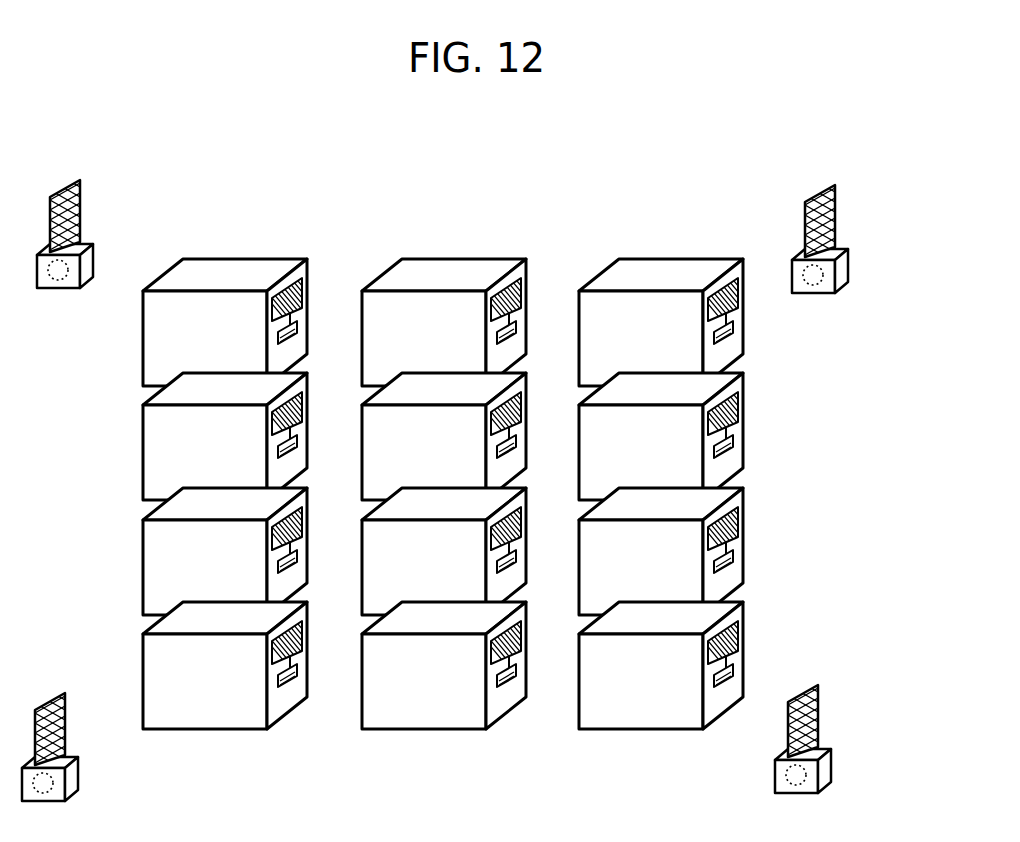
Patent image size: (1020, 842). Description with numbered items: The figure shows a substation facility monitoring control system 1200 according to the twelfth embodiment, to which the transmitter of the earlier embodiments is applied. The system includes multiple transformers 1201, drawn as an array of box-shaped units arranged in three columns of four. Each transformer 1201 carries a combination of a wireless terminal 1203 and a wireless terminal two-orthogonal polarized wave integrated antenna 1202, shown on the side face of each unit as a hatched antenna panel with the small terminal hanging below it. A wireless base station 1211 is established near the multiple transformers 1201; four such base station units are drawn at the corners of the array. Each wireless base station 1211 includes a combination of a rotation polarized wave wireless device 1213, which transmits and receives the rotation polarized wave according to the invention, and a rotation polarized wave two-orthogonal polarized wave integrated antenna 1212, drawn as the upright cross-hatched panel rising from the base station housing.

The substation facility monitoring control system 1200 is at (126, 137).
The transformer 1201 is at (619, 259).
The wireless terminal 2-orthogonal polarized wave integrated antenna 1202 is at (762, 413).
The wireless terminal 1203 is at (781, 452).
The wireless base station 1211 is at (785, 252).
The rotation polarized wave 2-orthogonal polarized wave integrated antenna 1212 is at (855, 203).
The rotation polarized wave wireless device 1213 is at (835, 314).